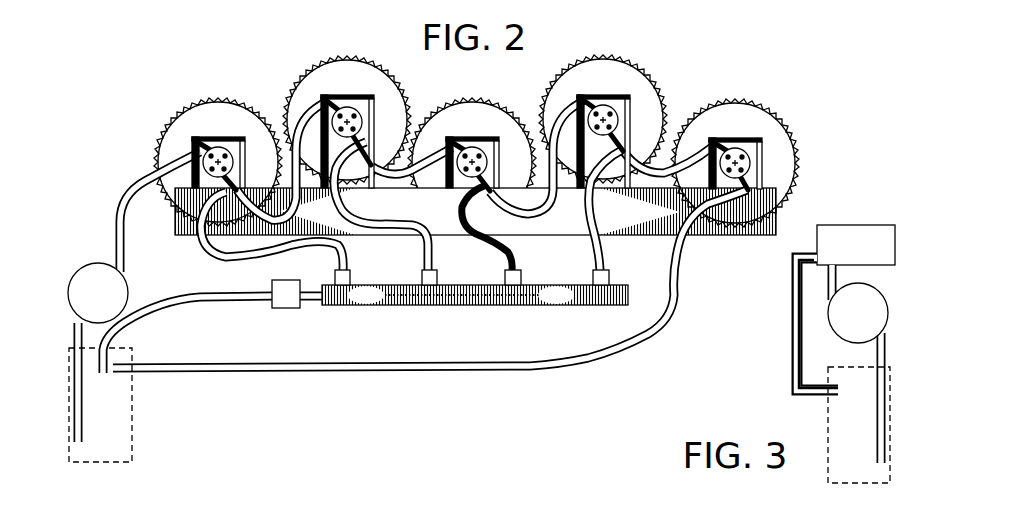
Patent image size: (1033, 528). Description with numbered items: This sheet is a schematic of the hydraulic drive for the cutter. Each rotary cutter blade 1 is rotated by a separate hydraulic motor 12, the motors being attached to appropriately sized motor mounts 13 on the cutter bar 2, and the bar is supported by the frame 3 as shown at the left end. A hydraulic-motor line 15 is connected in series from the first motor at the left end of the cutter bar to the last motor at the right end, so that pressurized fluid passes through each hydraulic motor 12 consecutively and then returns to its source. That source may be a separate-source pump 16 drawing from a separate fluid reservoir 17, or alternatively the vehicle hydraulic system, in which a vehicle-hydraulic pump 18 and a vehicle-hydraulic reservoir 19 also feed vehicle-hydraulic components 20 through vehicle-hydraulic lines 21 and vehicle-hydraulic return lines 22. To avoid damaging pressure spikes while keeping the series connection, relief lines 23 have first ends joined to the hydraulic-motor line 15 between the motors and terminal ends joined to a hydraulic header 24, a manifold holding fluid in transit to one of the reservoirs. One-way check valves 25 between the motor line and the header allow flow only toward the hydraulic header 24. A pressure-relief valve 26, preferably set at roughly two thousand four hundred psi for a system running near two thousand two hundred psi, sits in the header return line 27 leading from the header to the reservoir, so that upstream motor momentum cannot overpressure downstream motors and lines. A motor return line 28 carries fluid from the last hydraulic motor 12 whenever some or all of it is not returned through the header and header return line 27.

In FIG. 2, the rotary cutter blade 1 is at (336, 85).
In FIG. 2, the cutter bar 2 is at (448, 221).
In FIG. 2, the frame 3 is at (175, 222).
In FIG. 2, the hydraulic motor 12 is at (318, 118).
In FIG. 2, the motor mount 13 is at (650, 168).
In FIG. 2, the hydraulic-motor line 15 is at (140, 188).
In FIG. 2, the separate-source pump 16 is at (86, 304).
In FIG. 2, the separate fluid reservoir 17 is at (132, 430).
In FIG. 3, the vehicle-hydraulic pump 18 is at (871, 323).
In FIG. 3, the vehicle-hydraulic reservoir 19 is at (828, 428).
In FIG. 3, the vehicle-hydraulic components 20 is at (844, 256).
In FIG. 3, the vehicle-hydraulic line 21 is at (877, 397).
In FIG. 3, the vehicle-hydraulic return line 22 is at (800, 362).
In FIG. 2, the relief line 23 is at (362, 235).
In FIG. 2, the hydraulic header 24 is at (470, 292).
In FIG. 2, the one-way check valve 25 is at (378, 288).
In FIG. 2, the pressure-relief valve 26 is at (280, 306).
In FIG. 2, the header return line 27 is at (170, 315).
In FIG. 2, the motor return line 28 is at (478, 374).